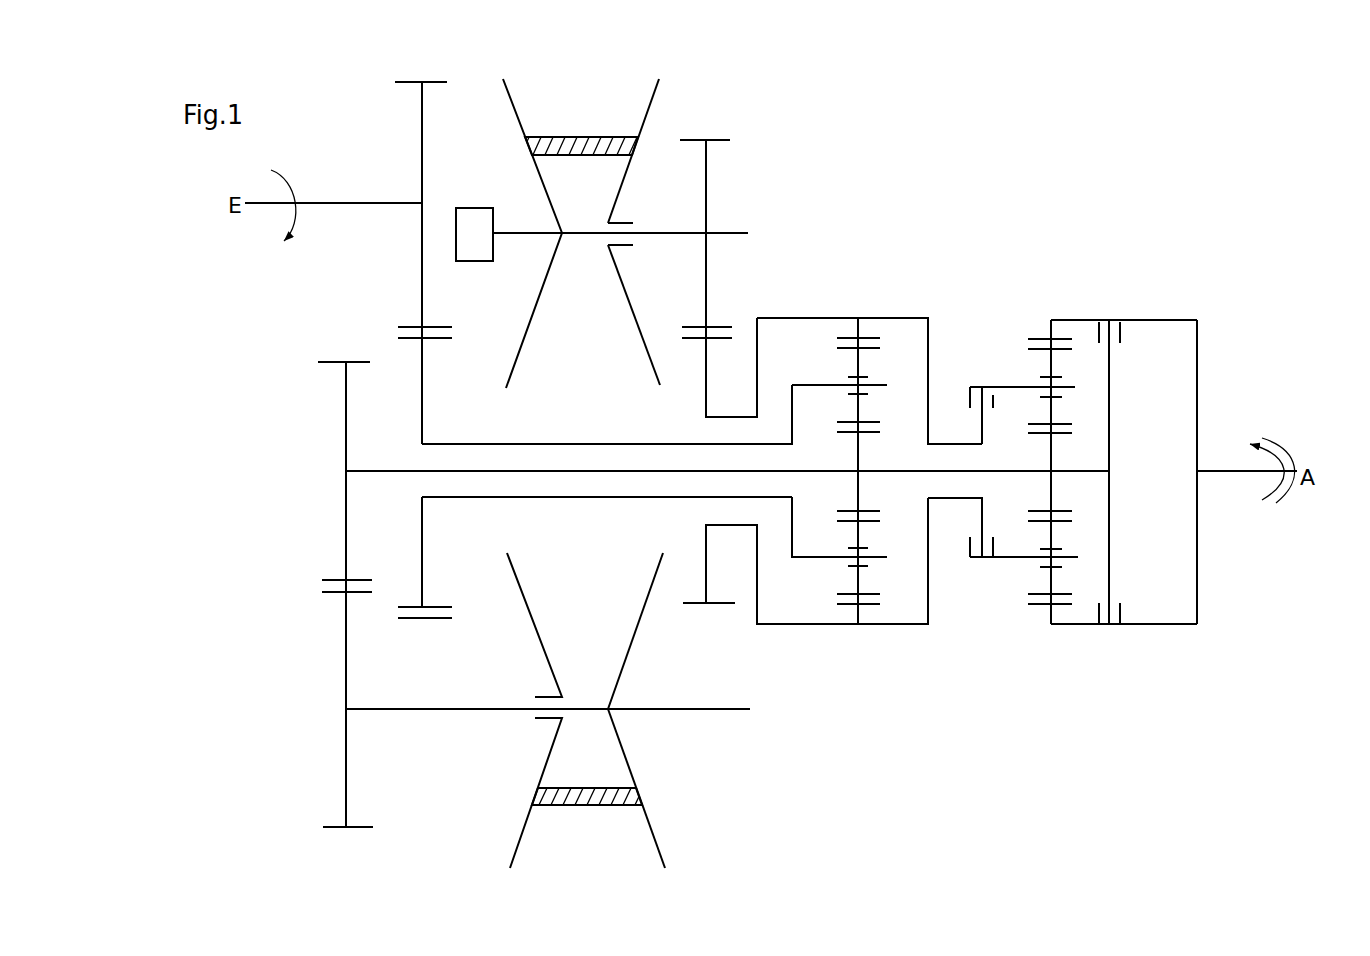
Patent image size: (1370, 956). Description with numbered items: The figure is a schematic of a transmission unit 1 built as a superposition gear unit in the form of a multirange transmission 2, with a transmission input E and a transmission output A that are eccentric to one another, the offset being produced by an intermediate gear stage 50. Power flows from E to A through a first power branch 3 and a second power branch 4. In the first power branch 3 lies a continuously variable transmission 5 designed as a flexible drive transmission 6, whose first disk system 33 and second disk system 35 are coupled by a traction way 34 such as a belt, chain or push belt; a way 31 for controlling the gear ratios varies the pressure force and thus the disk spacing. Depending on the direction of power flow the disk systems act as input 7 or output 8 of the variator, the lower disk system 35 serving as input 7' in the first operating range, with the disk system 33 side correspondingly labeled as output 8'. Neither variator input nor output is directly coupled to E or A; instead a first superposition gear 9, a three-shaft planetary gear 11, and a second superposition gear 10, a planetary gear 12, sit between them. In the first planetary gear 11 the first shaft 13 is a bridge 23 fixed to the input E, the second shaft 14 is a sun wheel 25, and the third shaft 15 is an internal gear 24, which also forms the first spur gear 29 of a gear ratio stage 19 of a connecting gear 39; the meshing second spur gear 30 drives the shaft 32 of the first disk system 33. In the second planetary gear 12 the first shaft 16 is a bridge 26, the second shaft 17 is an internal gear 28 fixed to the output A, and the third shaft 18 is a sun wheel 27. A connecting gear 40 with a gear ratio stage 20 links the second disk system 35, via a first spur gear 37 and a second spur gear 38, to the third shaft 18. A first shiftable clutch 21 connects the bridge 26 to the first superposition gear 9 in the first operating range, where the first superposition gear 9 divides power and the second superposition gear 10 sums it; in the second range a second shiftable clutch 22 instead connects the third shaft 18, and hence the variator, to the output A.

The transmission unit 1 is at (672, 110).
The multirange transmission 2 is at (647, 232).
The first power branch 3 is at (571, 123).
The second power branch 4 is at (1017, 317).
The continuously variable transmission 5 is at (605, 120).
The flexible drive transmission 6 is at (585, 146).
The input 7 is at (647, 232).
The movable pulley disc of first pulley 8' is at (634, 232).
The output 8 is at (669, 631).
The input 7' is at (635, 631).
The first superposition gear 9 is at (863, 298).
The first planetary gear 11 is at (839, 471).
The second superposition gear 10 is at (1120, 310).
The second planetary gear 12 is at (1109, 473).
The first shaft 13 is at (695, 444).
The second shaft 14 is at (892, 460).
The third shaft 15 is at (780, 317).
The internal gear 24 is at (869, 381).
The first shaft 16 is at (1023, 382).
The second shaft 17 is at (1198, 372).
The third shaft 18 is at (1022, 468).
The gear ratio stage 19 is at (727, 285).
The gear ratio stage 20 is at (548, 650).
The first shiftable clutch 21 is at (985, 563).
The second shiftable clutch 22 is at (1097, 297).
The bridge 23 is at (817, 382).
The sun wheel 25 is at (858, 453).
The bridge 26 is at (1037, 543).
The sun wheel 27 is at (1052, 458).
The internal gear 28 is at (1140, 318).
The first spur gear 29 is at (706, 403).
The second spur gear 30 is at (706, 150).
The way for controlling the gear ratios 31 is at (475, 253).
The shaft 32 is at (667, 237).
The first disk system 33 is at (515, 110).
The traction way 34 is at (587, 807).
The second disk system 35 is at (629, 767).
The first spur gear 37 is at (350, 773).
The second spur gear 38 is at (343, 512).
The connecting gear 39 is at (728, 215).
The connecting gear 40 is at (327, 643).
The intermediate gear stage 50 is at (418, 68).